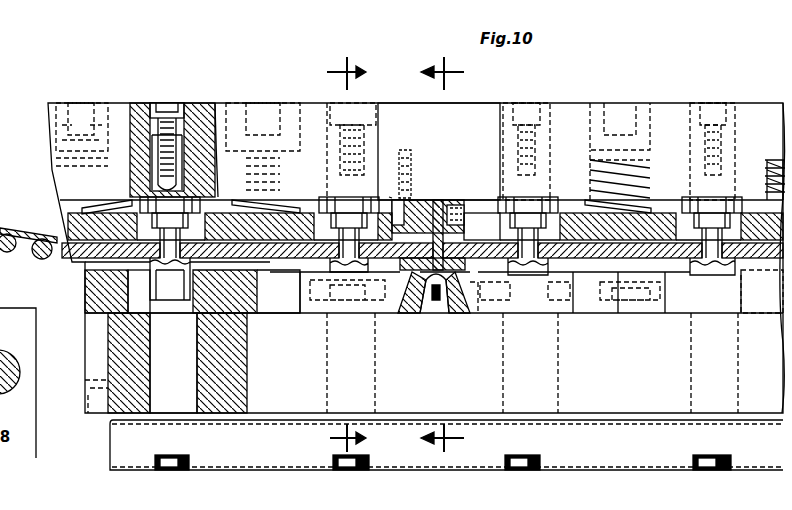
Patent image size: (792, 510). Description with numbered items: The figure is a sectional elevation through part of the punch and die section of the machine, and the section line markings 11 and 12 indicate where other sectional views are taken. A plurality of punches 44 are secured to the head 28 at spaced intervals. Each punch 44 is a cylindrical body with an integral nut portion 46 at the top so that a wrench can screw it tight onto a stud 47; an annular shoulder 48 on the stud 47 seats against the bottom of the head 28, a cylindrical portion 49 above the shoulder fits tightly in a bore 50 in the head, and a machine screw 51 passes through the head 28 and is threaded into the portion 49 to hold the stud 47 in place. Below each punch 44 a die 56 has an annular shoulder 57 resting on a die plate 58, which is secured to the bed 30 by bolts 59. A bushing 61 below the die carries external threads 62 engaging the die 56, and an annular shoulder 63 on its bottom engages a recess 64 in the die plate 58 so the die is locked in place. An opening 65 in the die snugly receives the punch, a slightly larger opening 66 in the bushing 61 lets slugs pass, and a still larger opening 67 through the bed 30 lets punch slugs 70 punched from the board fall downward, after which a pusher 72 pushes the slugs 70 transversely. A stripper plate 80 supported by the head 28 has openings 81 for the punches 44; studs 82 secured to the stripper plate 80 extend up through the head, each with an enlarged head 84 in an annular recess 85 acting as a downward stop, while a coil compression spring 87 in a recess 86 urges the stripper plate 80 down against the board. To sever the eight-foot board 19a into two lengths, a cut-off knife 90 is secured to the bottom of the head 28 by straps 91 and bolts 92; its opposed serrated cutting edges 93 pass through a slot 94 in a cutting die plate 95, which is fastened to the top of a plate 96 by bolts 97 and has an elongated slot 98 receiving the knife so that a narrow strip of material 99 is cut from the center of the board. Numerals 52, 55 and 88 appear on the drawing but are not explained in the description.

The section line 11- 11 is at (334, 254).
The section line 12- 12 is at (430, 254).
The board 19a is at (470, 200).
The head 28 is at (466, 122).
The bed 30 is at (140, 330).
The punch 44 is at (318, 263).
The nut portion 46 is at (352, 212).
The stud 47 is at (210, 190).
The annular shoulder 48 is at (478, 205).
The cylindrical portion 49 is at (207, 170).
The bore 50 is at (187, 140).
The machine screw 51 is at (158, 103).
The lower nut 52 is at (176, 258).
The roller support 55 is at (28, 219).
The die 56 is at (140, 271).
The annular shoulder 57 is at (150, 259).
The die plate 58 is at (140, 294).
The bolt 59 is at (93, 350).
The bushing 61 is at (135, 288).
The external threads 62 is at (140, 300).
The annular shoulder 63 is at (150, 300).
The recess 64 is at (218, 270).
The opening 65 is at (125, 255).
The opening 66 is at (157, 300).
The opening 67 is at (200, 380).
The punch slug 70 is at (158, 458).
The pusher 72 is at (113, 442).
The stripper plate 80 is at (308, 200).
The opening 81 is at (126, 165).
The stud 82 is at (60, 103).
The enlarged head 84 is at (97, 122).
The annular recess 85 is at (80, 128).
The recess 86 is at (237, 128).
The coil compression spring 87 is at (264, 150).
The hidden housing 88 is at (48, 135).
The cut-off knife 90 is at (437, 200).
The strap 91 is at (389, 197).
The bolt 92 is at (410, 185).
The serrated cutting edge 93 is at (466, 234).
The slot 94 is at (458, 300).
The die plate 95 is at (502, 290).
The plate 96 is at (407, 300).
The bolt 97 is at (503, 345).
The elongated slot 98 is at (436, 313).
The strip of material 99 is at (441, 300).